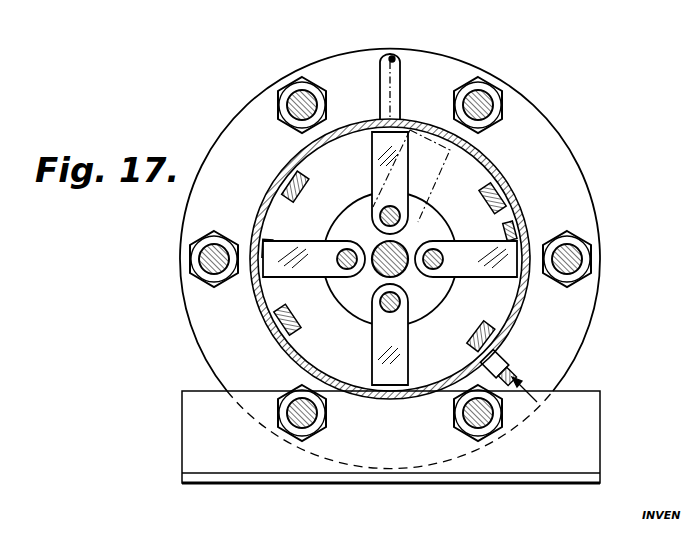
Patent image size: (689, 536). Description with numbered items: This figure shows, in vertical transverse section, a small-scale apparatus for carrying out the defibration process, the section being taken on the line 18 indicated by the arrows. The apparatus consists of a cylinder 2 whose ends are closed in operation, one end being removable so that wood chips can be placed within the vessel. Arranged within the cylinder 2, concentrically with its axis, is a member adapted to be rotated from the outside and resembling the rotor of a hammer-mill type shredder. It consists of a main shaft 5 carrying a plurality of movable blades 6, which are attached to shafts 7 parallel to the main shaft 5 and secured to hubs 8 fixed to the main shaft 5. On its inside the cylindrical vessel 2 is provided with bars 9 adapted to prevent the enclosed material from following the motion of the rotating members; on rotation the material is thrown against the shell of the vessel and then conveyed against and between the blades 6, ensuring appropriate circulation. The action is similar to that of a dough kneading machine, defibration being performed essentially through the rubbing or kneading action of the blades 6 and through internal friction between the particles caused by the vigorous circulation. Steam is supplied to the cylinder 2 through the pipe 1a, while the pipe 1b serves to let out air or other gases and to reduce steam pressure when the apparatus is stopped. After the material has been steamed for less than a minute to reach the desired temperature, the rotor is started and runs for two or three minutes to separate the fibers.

The pipe 1a is at (509, 363).
The pipe 1b is at (401, 90).
The cylinder 2 is at (491, 160).
The main shaft 5 is at (380, 269).
The movable blades 6 is at (303, 278).
The shafts 7 is at (381, 217).
The hubs 8 is at (357, 317).
The bars 9 is at (283, 192).
The section line 18- 18 is at (391, 516).